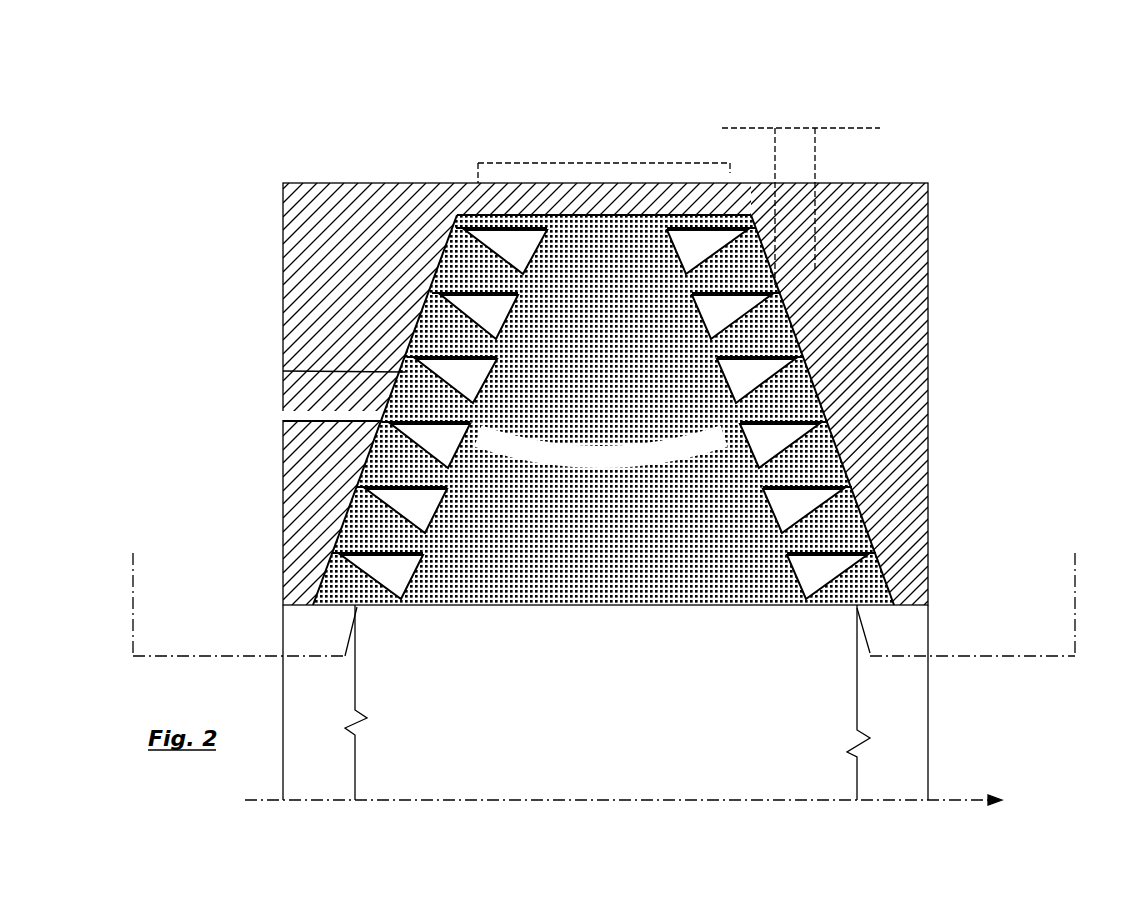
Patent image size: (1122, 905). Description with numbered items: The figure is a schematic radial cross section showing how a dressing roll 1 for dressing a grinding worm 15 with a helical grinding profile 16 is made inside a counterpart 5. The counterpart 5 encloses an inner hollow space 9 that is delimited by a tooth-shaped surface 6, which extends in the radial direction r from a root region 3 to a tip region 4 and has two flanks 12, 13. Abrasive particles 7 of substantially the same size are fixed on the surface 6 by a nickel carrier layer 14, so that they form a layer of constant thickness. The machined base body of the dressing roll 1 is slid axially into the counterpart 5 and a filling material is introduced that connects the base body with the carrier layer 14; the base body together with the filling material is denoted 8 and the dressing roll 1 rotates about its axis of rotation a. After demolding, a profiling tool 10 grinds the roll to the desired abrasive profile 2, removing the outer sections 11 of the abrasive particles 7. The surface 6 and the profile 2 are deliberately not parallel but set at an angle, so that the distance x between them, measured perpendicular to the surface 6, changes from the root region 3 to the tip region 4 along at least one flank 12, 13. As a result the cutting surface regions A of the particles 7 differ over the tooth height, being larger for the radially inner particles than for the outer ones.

The dressing roll 1 is at (872, 684).
The abrasive profile 2 is at (330, 468).
The root region 3 is at (952, 598).
The tip region 4 is at (948, 216).
The counterpart 5 is at (328, 205).
The tooth-shaped surface 6 is at (832, 410).
The abrasive particles 7 is at (800, 513).
The base body including filling material 8 is at (604, 573).
The inner space 9 is at (602, 314).
The profiling tool 10 is at (817, 168).
The outer sections of the abrasive particles 11 is at (283, 415).
The flank 12 is at (415, 275).
The flank 13 is at (832, 357).
The carrier layer 14 is at (427, 327).
The grinding worm 15 is at (251, 657).
The helical grinding profile 16 is at (478, 181).
The surface regions A is at (790, 494).
The distance x is at (325, 540).
The radial direction r is at (610, 140).
The axis of rotation a is at (640, 794).